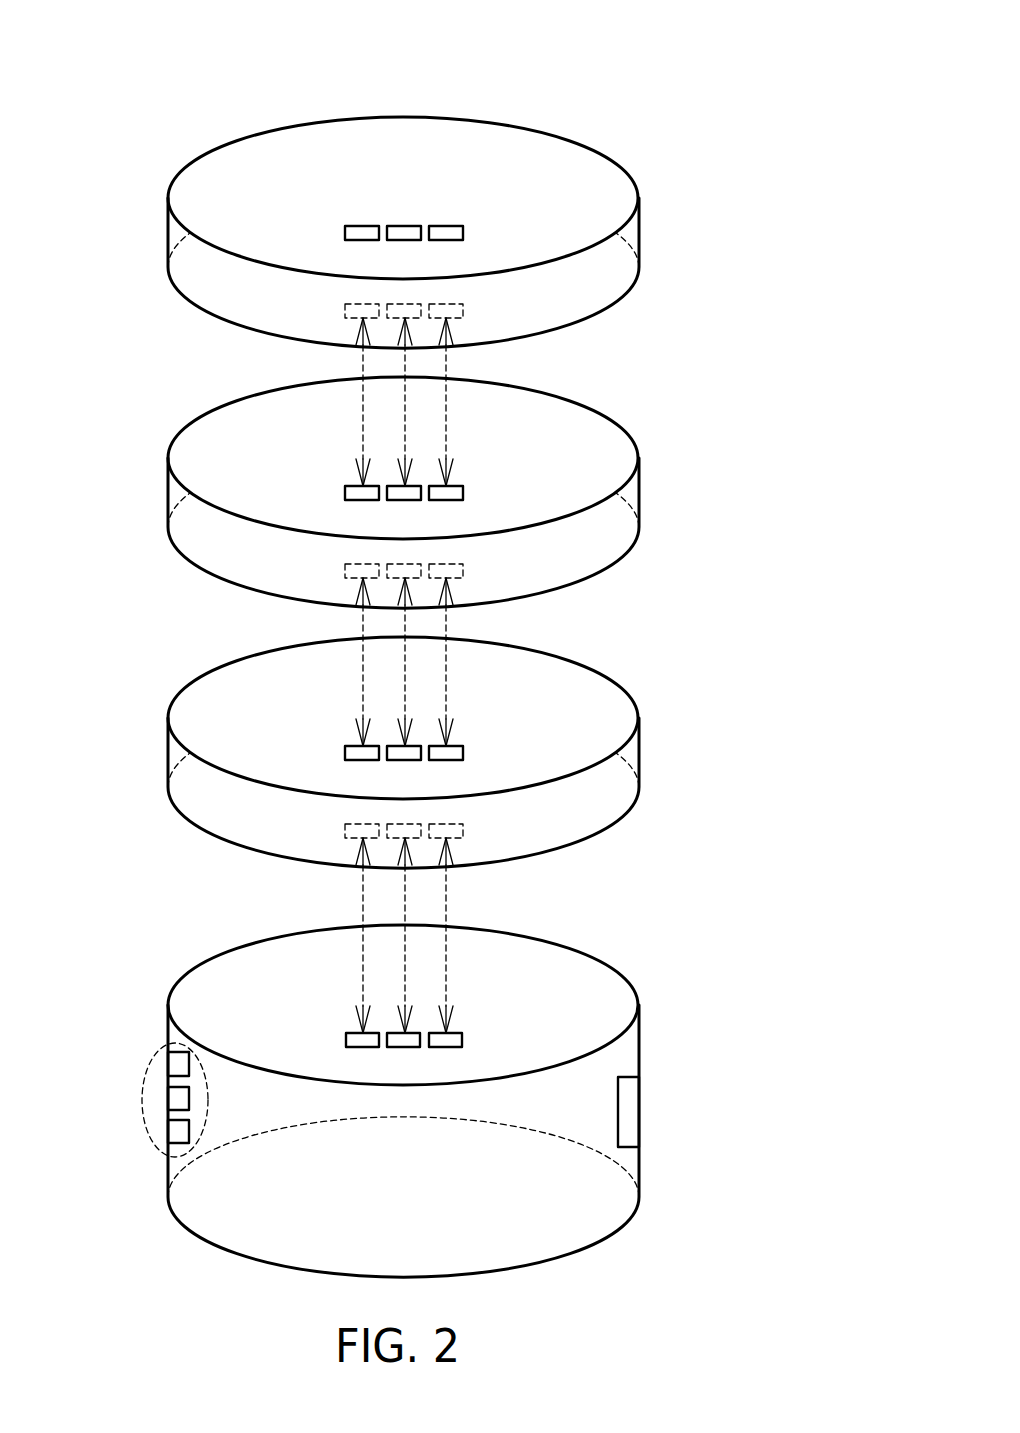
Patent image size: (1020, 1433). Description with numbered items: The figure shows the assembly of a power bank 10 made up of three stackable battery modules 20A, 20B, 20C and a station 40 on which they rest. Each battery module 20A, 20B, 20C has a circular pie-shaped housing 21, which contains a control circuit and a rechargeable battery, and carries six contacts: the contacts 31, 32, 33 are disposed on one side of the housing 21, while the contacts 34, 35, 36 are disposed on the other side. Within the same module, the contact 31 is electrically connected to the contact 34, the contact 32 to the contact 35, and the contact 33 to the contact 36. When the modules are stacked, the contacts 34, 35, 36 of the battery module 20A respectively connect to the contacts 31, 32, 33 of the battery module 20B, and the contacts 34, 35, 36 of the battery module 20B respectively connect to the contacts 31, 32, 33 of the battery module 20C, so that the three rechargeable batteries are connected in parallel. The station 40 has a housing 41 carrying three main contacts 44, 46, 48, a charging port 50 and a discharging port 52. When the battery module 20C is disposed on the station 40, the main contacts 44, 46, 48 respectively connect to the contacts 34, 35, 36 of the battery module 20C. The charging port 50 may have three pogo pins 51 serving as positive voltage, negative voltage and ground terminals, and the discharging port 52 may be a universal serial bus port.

The power bank 10 is at (618, 50).
The battery module 20A is at (714, 142).
The battery module 20B is at (714, 402).
The battery module 20C is at (714, 662).
The housing 21 is at (207, 153).
The contact 31 is at (361, 226).
The contact 32 is at (405, 226).
The contact 33 is at (447, 232).
The contact 34 is at (348, 311).
The contact 35 is at (401, 308).
The contact 36 is at (462, 313).
The station 40 is at (714, 943).
The housing 41 is at (188, 983).
The main contact 44 is at (345, 1040).
The main contact 46 is at (404, 1047).
The main contact 48 is at (466, 1036).
The charging port 50 is at (145, 1078).
The pogo pin 51 is at (175, 1065).
The discharging port 52 is at (641, 1112).